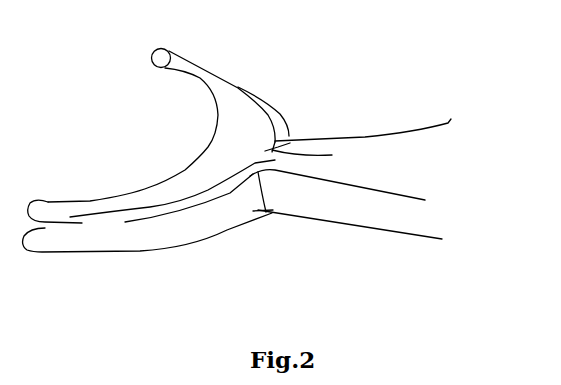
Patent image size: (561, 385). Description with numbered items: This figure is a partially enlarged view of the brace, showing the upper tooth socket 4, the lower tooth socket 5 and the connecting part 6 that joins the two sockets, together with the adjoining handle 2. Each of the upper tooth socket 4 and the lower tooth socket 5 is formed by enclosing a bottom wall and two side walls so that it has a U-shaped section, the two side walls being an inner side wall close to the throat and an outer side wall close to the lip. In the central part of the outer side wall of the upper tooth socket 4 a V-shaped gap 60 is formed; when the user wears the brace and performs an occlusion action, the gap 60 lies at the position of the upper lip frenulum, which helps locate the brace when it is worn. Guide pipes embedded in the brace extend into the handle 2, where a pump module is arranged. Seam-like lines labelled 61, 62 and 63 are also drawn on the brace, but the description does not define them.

The handle 2 is at (346, 195).
The upper tooth socket 4 is at (196, 72).
The lower tooth socket 5 is at (165, 222).
The connecting part 6 is at (266, 212).
The V-shaped gap 60 is at (272, 158).
The first seam 61 is at (196, 72).
The second seam 62 is at (227, 153).
The third seam 63 is at (273, 140).